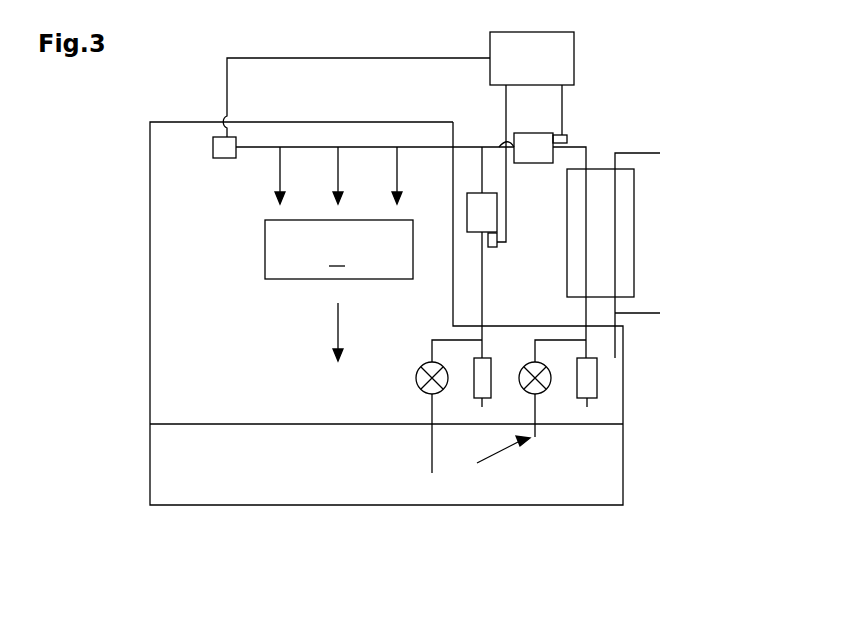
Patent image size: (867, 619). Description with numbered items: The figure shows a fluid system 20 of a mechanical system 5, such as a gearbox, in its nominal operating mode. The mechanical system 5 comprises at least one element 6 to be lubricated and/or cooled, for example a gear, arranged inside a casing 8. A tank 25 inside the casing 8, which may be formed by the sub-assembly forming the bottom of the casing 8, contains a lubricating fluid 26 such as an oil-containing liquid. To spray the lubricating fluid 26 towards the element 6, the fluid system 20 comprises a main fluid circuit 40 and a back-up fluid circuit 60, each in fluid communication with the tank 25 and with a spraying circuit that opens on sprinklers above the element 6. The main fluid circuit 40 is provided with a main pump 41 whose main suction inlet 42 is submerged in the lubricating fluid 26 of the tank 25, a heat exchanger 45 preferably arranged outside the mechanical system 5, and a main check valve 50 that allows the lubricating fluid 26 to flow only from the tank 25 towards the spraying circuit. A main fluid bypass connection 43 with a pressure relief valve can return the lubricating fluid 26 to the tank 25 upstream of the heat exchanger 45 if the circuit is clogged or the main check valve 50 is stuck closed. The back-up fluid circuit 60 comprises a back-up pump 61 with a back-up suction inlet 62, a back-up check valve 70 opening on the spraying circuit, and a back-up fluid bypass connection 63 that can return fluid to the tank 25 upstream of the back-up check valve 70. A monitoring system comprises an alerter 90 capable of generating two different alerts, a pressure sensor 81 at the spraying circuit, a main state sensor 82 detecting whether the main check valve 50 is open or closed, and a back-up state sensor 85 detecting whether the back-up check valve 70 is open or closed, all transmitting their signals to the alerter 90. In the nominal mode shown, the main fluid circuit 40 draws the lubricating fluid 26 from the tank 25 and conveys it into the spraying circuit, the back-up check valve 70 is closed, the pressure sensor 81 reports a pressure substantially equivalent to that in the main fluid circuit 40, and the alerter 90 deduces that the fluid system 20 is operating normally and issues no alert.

The mechanical system 5 is at (118, 240).
The casing 8 is at (150, 192).
The element to be lubricated and/or to be cooled 6 is at (339, 254).
The fluid system 20 is at (364, 448).
The tank 25 is at (225, 487).
The lubricating fluid 26 is at (292, 473).
The main fluid circuit 40 is at (670, 140).
The main pump 41 is at (551, 378).
The main suction inlet 42 is at (537, 432).
The main fluid bypass connection 43 is at (612, 370).
The heat exchanger 45 is at (652, 232).
The main check valve 50 is at (528, 163).
The back-up fluid circuit 60 is at (414, 448).
The back-up pump 61 is at (416, 380).
The back-up suction inlet 62 is at (432, 462).
The back-up fluid bypass connection 63 is at (461, 447).
The back-up check valve 70 is at (467, 212).
The pressure sensor 81 is at (228, 160).
The main state sensor 82 is at (567, 140).
The back-up state sensor 85 is at (497, 247).
The alerter 90 is at (574, 44).